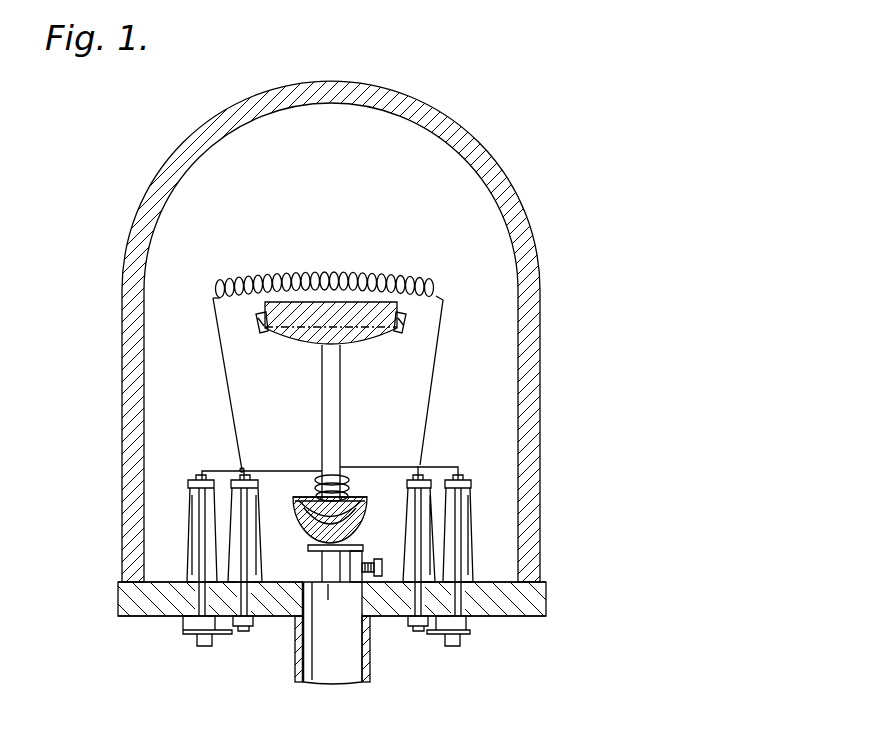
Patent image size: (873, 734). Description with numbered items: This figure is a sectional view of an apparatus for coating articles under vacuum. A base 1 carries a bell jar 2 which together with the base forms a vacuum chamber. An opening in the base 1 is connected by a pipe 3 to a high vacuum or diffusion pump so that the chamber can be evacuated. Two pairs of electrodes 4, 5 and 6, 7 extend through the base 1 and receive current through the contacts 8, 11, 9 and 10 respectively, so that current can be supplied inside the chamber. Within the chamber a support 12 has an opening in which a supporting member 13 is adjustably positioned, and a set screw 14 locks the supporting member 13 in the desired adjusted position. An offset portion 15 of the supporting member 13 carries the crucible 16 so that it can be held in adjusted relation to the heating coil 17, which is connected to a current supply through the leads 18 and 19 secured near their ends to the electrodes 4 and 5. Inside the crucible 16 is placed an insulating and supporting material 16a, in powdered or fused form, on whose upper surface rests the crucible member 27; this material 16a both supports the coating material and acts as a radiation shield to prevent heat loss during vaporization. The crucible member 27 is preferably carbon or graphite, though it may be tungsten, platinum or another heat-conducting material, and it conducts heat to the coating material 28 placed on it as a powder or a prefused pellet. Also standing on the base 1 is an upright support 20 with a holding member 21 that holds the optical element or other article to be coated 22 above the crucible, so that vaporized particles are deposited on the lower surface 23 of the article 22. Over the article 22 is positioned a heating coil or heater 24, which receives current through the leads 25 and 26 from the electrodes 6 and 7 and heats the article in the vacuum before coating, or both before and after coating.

The base 1 is at (548, 605).
The bell jar 2 is at (538, 490).
The pipe 3 is at (295, 667).
The electrode 4 is at (192, 533).
The electrode 5 is at (466, 534).
The electrode 6 is at (245, 497).
The electrode 7 is at (420, 500).
The contact 8 is at (224, 633).
The contact 9 is at (240, 631).
The contact 10 is at (414, 631).
The contact 11 is at (446, 633).
The support 12 is at (372, 562).
The supporting member 13 is at (362, 549).
The set screw 14 is at (382, 569).
The offset portion 15 is at (306, 546).
The crucible 16 is at (295, 514).
The insulating and supporting material 16a is at (300, 500).
The heating coil 17 is at (345, 492).
The lead 18 is at (278, 470).
The lead 19 is at (447, 464).
The upright support 20 is at (341, 408).
The holding member 21 is at (270, 332).
The article to be coated 22 is at (350, 300).
The lower surface 23 is at (346, 344).
The heating coil 24 is at (276, 290).
The lead 25 is at (227, 383).
The lead 26 is at (433, 378).
The crucible member 27 is at (308, 527).
The coating material 28 is at (364, 503).